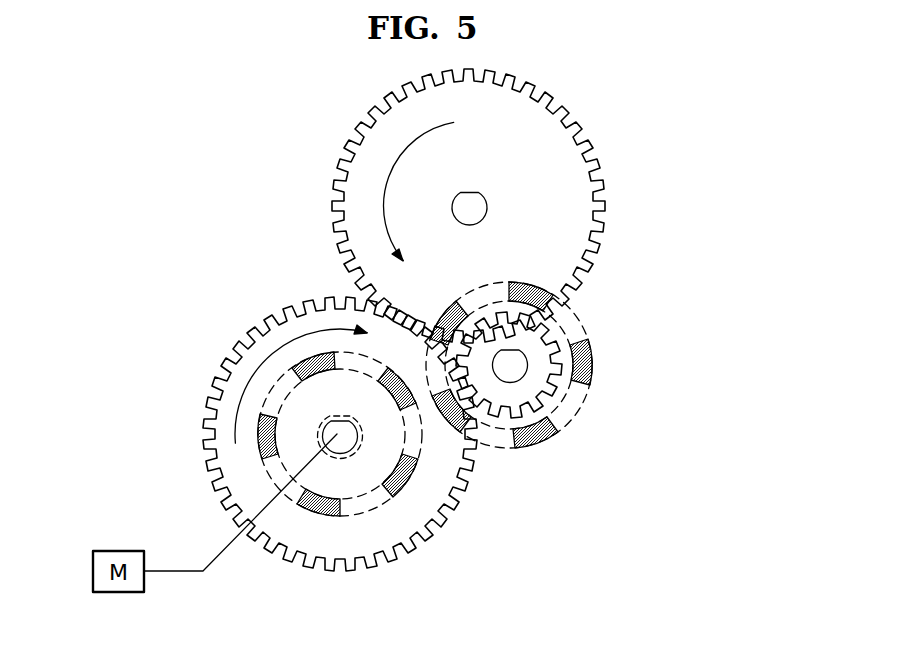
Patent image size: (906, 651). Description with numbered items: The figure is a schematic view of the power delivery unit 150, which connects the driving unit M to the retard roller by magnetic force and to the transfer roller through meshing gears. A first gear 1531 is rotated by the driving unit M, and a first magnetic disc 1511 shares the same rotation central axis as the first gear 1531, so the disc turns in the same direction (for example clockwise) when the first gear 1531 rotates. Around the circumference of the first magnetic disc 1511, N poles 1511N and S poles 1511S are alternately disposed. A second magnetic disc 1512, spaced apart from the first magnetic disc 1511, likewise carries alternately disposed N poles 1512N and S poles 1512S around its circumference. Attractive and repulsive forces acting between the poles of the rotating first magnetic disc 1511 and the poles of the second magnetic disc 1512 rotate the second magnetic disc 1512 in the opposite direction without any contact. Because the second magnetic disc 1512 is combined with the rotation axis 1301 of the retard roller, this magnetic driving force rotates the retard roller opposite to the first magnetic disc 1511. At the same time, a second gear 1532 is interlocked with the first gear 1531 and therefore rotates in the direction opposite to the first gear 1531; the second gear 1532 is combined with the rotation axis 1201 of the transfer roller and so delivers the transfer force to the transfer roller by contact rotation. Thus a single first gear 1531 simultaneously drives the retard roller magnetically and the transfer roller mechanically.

The power delivery unit 150 is at (260, 208).
The rotation axis of the transfer roller 1201 is at (487, 205).
The second gear 1532 is at (517, 206).
The first gear 1531 is at (338, 456).
The rotation axis of the retard roller 1301 is at (527, 362).
The second magnetic disc 1512 is at (583, 387).
The S poles of the second magnetic disc 1512S is at (570, 402).
The N poles of the second magnetic disc 1512N is at (543, 433).
The first magnetic disc 1511 is at (388, 493).
The S poles of the first magnetic disc 1511S is at (370, 500).
The N poles of the first magnetic disc 1511N is at (403, 487).